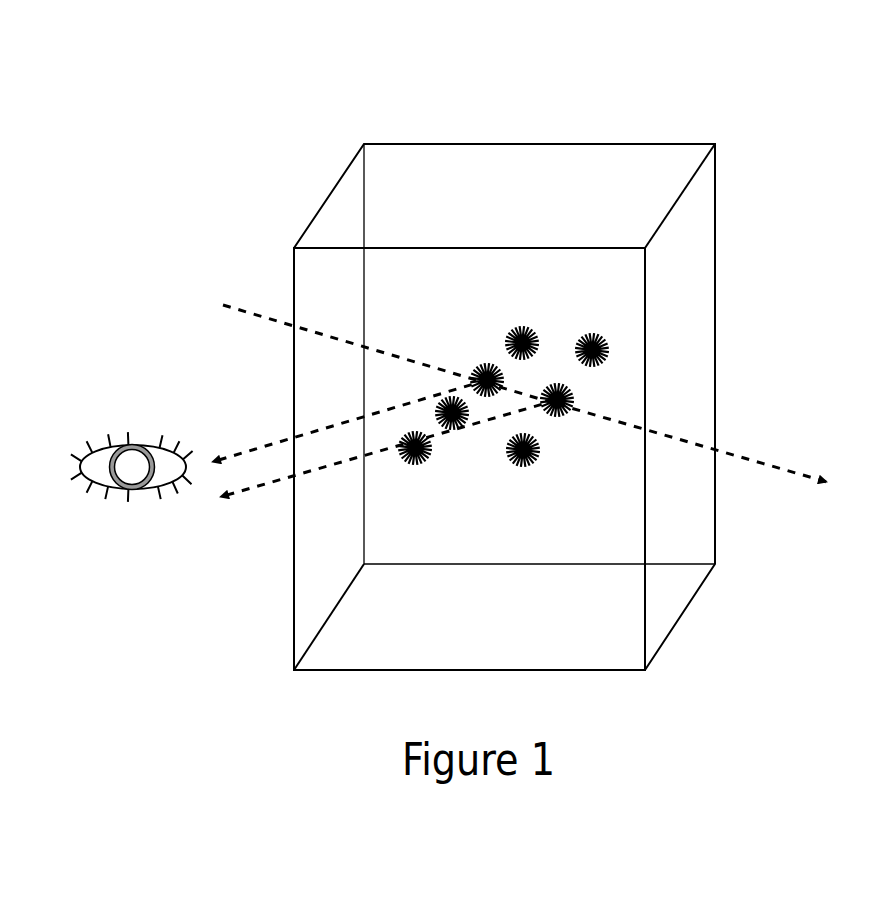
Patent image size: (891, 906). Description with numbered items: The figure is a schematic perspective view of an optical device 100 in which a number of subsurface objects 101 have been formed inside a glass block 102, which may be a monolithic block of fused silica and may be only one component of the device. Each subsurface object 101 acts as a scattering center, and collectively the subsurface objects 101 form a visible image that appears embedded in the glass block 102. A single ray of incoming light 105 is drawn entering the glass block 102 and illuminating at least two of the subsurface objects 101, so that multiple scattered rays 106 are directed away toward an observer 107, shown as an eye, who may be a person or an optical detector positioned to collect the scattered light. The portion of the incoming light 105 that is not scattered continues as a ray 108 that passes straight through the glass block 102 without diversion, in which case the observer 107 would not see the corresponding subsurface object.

The optical device 100 is at (557, 118).
The subsurface objects 101 is at (488, 318).
The glass block 102 is at (717, 263).
The incoming light 105 is at (253, 312).
The scattered rays 106 is at (313, 473).
The observer 107 is at (128, 443).
The unscattered ray 108 is at (745, 460).